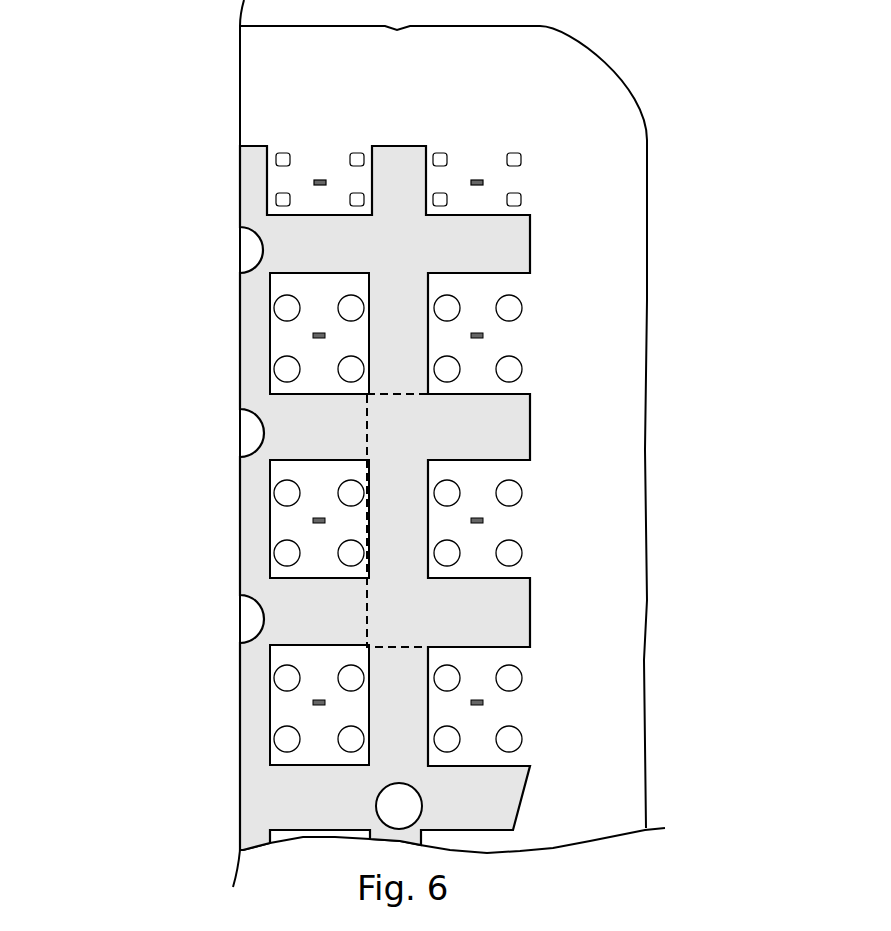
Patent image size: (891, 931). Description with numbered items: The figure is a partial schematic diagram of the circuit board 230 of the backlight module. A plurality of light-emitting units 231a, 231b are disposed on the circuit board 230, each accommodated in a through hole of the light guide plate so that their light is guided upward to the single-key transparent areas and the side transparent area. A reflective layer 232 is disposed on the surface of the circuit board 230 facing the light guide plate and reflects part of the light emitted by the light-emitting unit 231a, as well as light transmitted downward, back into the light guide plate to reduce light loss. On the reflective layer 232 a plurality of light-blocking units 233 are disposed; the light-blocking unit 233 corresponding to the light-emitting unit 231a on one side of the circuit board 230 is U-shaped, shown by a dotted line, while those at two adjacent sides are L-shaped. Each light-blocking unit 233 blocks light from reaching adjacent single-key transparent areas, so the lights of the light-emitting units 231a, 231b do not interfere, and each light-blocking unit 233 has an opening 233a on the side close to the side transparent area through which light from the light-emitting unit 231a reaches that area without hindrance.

The circuit board 230 is at (470, 443).
The reflective layer 232 is at (627, 170).
The light-blocking unit 233 is at (367, 423).
The opening 233a is at (510, 528).
The light-emitting unit 231a is at (478, 521).
The light-emitting unit 231b is at (313, 520).